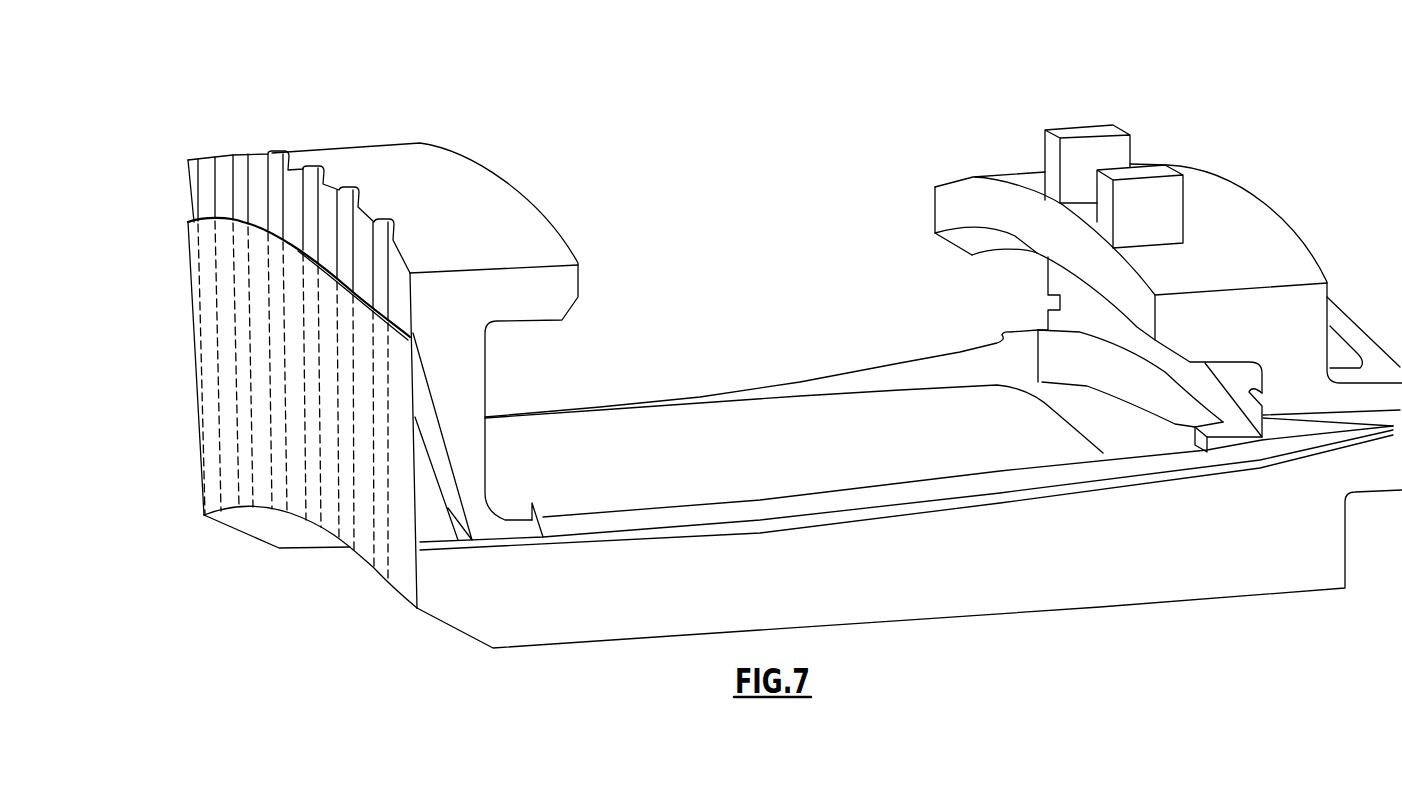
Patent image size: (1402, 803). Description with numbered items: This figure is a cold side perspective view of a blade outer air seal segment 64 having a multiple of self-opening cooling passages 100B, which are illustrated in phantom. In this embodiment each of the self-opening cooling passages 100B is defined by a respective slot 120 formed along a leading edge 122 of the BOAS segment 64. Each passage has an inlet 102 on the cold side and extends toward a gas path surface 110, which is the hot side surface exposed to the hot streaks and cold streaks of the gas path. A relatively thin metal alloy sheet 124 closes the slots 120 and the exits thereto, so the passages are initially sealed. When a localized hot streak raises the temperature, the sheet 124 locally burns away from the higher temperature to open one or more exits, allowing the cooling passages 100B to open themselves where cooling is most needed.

The self-opening cooling passages 100B is at (196, 120).
The inlet 102 is at (269, 343).
The gas path surface 110 is at (977, 615).
The slot 120 is at (320, 172).
The leading edge 122 is at (190, 201).
The metal alloy sheet 124 is at (256, 381).
The BOAS segment 64 is at (1290, 153).